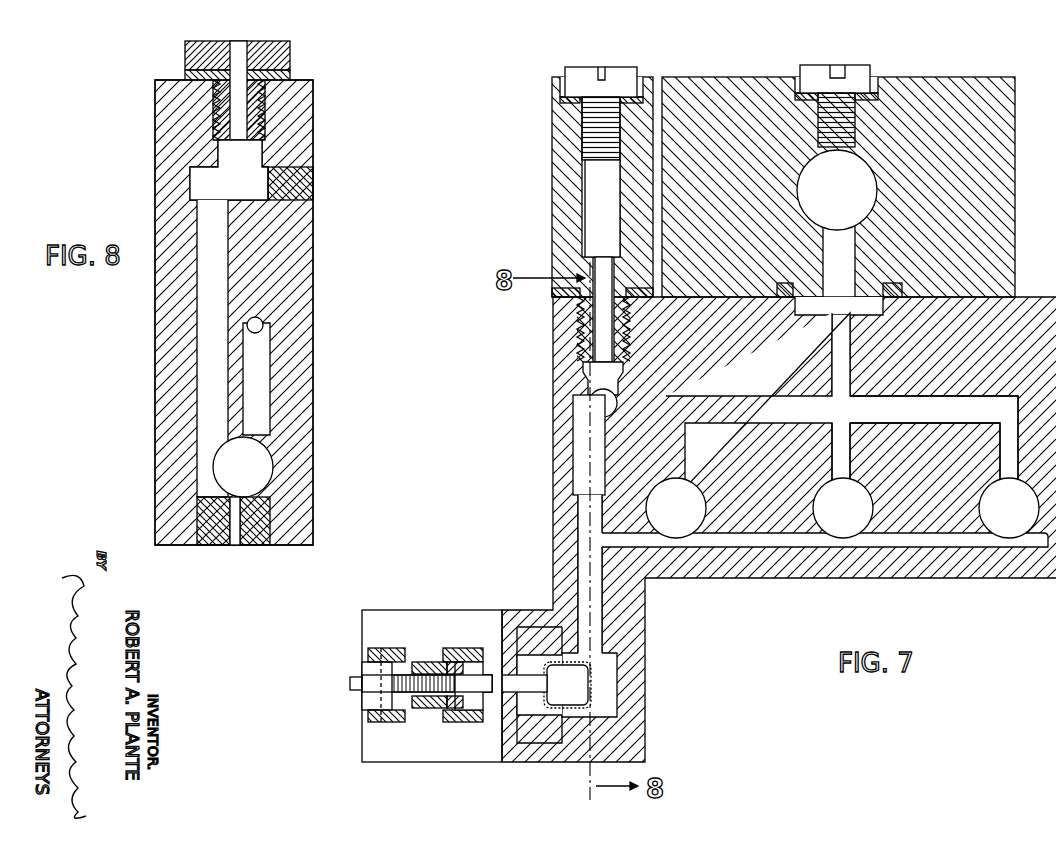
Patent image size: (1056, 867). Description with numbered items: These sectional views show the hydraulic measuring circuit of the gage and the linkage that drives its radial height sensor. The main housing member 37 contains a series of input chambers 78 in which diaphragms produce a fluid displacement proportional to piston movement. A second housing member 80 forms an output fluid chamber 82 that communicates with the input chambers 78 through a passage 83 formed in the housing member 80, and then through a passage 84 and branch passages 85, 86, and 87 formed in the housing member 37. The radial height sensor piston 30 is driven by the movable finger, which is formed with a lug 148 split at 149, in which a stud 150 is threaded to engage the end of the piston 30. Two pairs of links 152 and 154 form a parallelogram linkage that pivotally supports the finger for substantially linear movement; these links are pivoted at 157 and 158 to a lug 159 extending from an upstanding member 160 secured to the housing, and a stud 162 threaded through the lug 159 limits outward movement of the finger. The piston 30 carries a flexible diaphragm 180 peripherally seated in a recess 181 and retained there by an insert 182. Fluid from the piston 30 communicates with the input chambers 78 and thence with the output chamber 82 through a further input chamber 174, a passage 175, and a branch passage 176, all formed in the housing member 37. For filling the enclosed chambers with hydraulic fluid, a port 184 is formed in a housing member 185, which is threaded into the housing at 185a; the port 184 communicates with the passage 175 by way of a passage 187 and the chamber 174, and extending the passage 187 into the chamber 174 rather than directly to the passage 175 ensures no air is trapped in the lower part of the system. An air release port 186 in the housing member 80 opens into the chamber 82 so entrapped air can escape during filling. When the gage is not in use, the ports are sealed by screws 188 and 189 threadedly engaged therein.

In FIG. 7, the sensor piston 30 is at (577, 694).
In FIG. 8, the housing member 37 is at (155, 378).
In FIG. 7, the input chambers 78 is at (686, 517).
In FIG. 7, the second housing member 80 is at (703, 77).
In FIG. 7, the output fluid chamber 82 is at (847, 199).
In FIG. 7, the passage 83 is at (848, 255).
In FIG. 7, the passage 84 is at (852, 360).
In FIG. 7, the branch passage 85 is at (938, 419).
In FIG. 7, the branch passage 86 is at (845, 456).
In FIG. 7, the branch passage 87 is at (744, 419).
In FIG. 7, the lug 148 is at (418, 662).
In FIG. 7, the split 149 is at (437, 708).
In FIG. 7, the stud 150 is at (486, 642).
In FIG. 7, the links 152 is at (380, 650).
In FIG. 7, the links 154 is at (452, 648).
In FIG. 7, the pivot 157 is at (385, 722).
In FIG. 7, the pivot 158 is at (465, 722).
In FIG. 7, the lug 159 is at (362, 700).
In FIG. 7, the upstanding member 160 is at (385, 762).
In FIG. 7, the stud 162 is at (352, 684).
In FIG. 8, the input chamber 174 is at (257, 483).
In FIG. 7, the input chamber 174 is at (607, 668).
In FIG. 8, the passage 175 is at (265, 398).
In FIG. 7, the passage 175 is at (600, 592).
In FIG. 8, the branch passage 176 is at (262, 325).
In FIG. 7, the branch passage 176 is at (763, 542).
In FIG. 7, the flexible diaphragm 180 is at (590, 703).
In FIG. 7, the recess 181 is at (518, 745).
In FIG. 7, the insert 182 is at (500, 740).
In FIG. 7, the port 184 is at (591, 190).
In FIG. 8, the housing member 185 is at (185, 45).
In FIG. 7, the housing member 185 is at (553, 80).
In FIG. 8, the threaded connection 185a is at (195, 112).
In FIG. 7, the threaded connection 185a is at (577, 332).
In FIG. 7, the air release port 186 is at (818, 122).
In FIG. 8, the passage 187 is at (226, 299).
In FIG. 7, the passage 187 is at (573, 440).
In FIG. 7, the screw 188 is at (620, 72).
In FIG. 7, the screw 189 is at (857, 67).